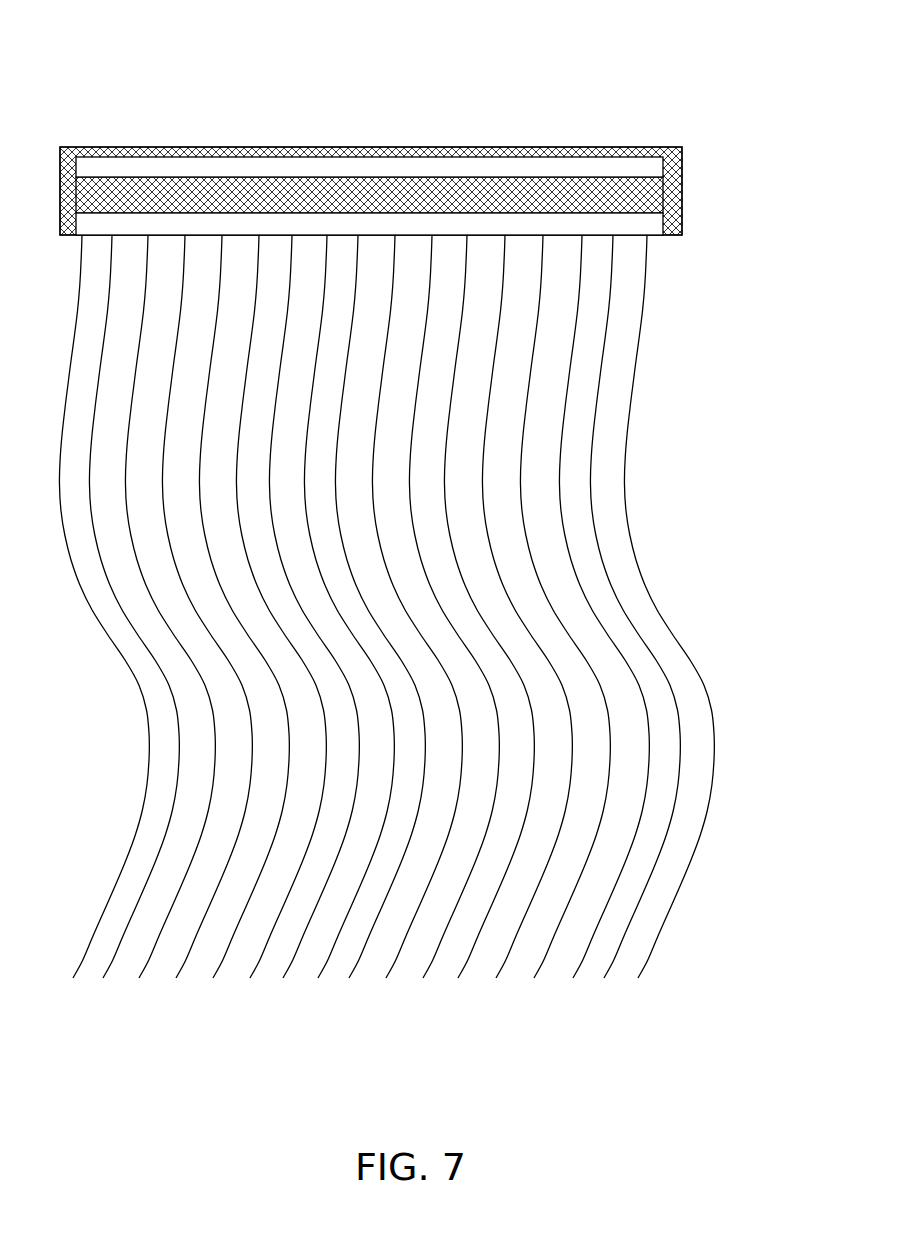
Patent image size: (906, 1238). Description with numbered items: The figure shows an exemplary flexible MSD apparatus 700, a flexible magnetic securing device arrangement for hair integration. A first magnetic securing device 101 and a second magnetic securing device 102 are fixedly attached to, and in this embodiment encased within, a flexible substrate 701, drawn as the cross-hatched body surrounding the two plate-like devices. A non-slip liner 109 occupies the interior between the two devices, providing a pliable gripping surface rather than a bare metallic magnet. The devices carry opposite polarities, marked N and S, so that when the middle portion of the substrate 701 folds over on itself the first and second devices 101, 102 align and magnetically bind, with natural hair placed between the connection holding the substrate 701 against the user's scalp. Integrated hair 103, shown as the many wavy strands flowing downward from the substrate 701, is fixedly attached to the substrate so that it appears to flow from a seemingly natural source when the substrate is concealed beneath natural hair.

The flexible MSD apparatus 700 is at (128, 81).
The flexible substrate 701 is at (672, 192).
The first magnetic securing device 101 is at (290, 167).
The non-slip liner 109 is at (393, 193).
The second magnetic securing device 102 is at (103, 231).
The integrated hair 103 is at (367, 606).